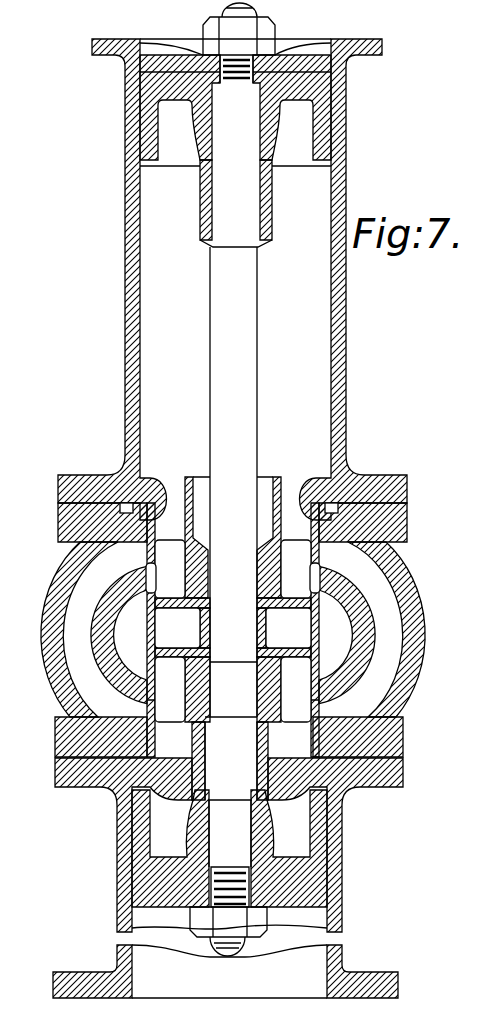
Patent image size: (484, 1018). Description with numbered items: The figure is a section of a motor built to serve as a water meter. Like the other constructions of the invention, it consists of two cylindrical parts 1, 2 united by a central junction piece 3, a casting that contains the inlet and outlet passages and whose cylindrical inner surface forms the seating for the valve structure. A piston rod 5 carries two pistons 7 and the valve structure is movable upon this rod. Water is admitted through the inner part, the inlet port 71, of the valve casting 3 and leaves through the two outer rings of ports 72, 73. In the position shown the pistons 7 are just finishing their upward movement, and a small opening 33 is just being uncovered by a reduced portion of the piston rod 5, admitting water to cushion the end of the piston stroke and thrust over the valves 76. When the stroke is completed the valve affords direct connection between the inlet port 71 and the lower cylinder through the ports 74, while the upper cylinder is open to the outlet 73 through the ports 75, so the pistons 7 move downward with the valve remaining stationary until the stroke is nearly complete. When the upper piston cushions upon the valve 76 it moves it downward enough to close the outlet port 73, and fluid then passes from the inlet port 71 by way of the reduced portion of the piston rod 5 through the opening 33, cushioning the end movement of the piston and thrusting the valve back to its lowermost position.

The cylindrical part 1 is at (122, 920).
The cylindrical part 2 is at (133, 250).
The central junction piece 3 is at (65, 525).
The piston rod 5 is at (217, 357).
The piston 7 is at (161, 161).
The small opening 33 is at (207, 552).
The inlet port 71 is at (302, 632).
The outlet port 72 is at (230, 703).
The outlet port 73 is at (232, 574).
The ports 74 is at (310, 687).
The ports 75 is at (151, 583).
The valve 76 is at (176, 648).